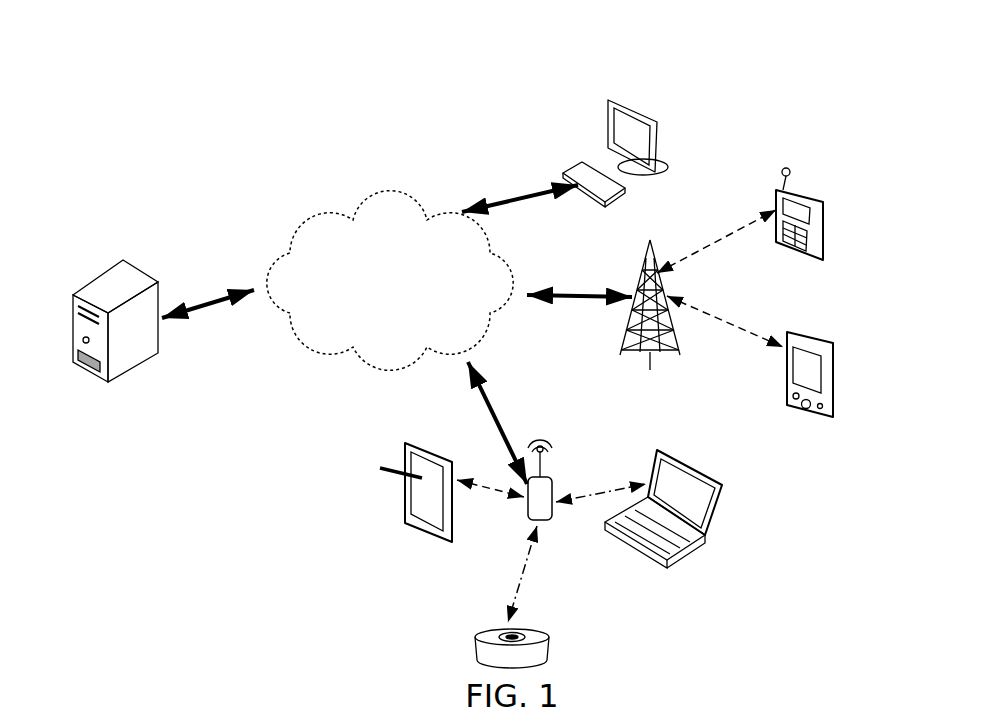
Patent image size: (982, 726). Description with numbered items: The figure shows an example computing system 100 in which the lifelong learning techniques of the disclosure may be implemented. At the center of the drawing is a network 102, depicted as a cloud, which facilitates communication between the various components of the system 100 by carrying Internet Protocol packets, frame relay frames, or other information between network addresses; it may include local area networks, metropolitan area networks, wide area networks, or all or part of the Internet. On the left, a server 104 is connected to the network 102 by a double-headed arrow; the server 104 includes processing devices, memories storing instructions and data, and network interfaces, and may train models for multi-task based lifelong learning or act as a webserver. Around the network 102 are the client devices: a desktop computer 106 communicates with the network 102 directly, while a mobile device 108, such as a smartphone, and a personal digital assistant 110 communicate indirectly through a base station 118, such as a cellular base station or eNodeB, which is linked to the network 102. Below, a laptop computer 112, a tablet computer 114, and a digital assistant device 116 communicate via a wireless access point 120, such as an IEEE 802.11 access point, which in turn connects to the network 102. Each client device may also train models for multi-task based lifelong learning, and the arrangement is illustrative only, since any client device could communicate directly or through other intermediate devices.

The computing system 100 is at (757, 89).
The network 102 is at (390, 281).
The server 104 is at (97, 282).
The desktop computer 106 is at (607, 113).
The mobile device 108 is at (828, 206).
The personal digital assistant 110 is at (820, 340).
The laptop computer 112 is at (724, 492).
The tablet computer 114 is at (405, 458).
The digital assistant device 116 is at (552, 634).
The base station 118 is at (675, 333).
The wireless access point 120 is at (557, 453).